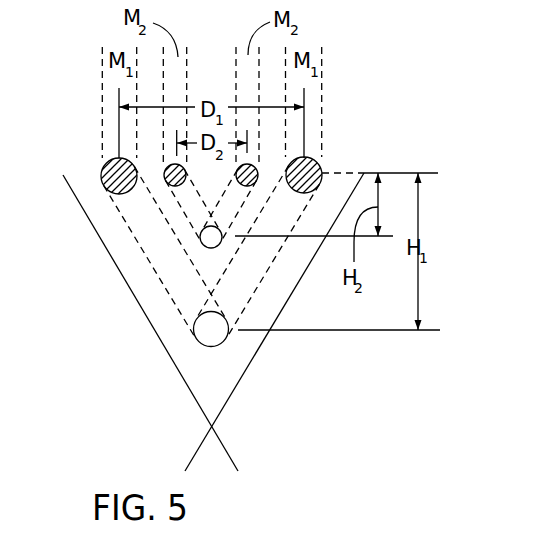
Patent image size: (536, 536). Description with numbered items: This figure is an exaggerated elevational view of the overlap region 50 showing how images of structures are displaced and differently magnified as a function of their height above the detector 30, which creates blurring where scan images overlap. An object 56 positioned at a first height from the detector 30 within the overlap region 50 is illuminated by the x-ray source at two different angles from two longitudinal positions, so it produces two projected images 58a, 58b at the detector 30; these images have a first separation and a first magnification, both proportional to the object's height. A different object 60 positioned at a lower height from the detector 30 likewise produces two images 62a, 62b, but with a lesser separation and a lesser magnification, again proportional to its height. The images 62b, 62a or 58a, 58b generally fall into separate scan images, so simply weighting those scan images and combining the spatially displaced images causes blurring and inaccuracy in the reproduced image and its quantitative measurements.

The detector 30 is at (403, 167).
The overlap region 50 is at (182, 355).
The object 56 is at (222, 343).
The projected image 58a is at (320, 163).
The projected image 58b is at (102, 170).
The object 60 is at (211, 248).
The image 62a is at (256, 166).
The image 62b is at (170, 185).